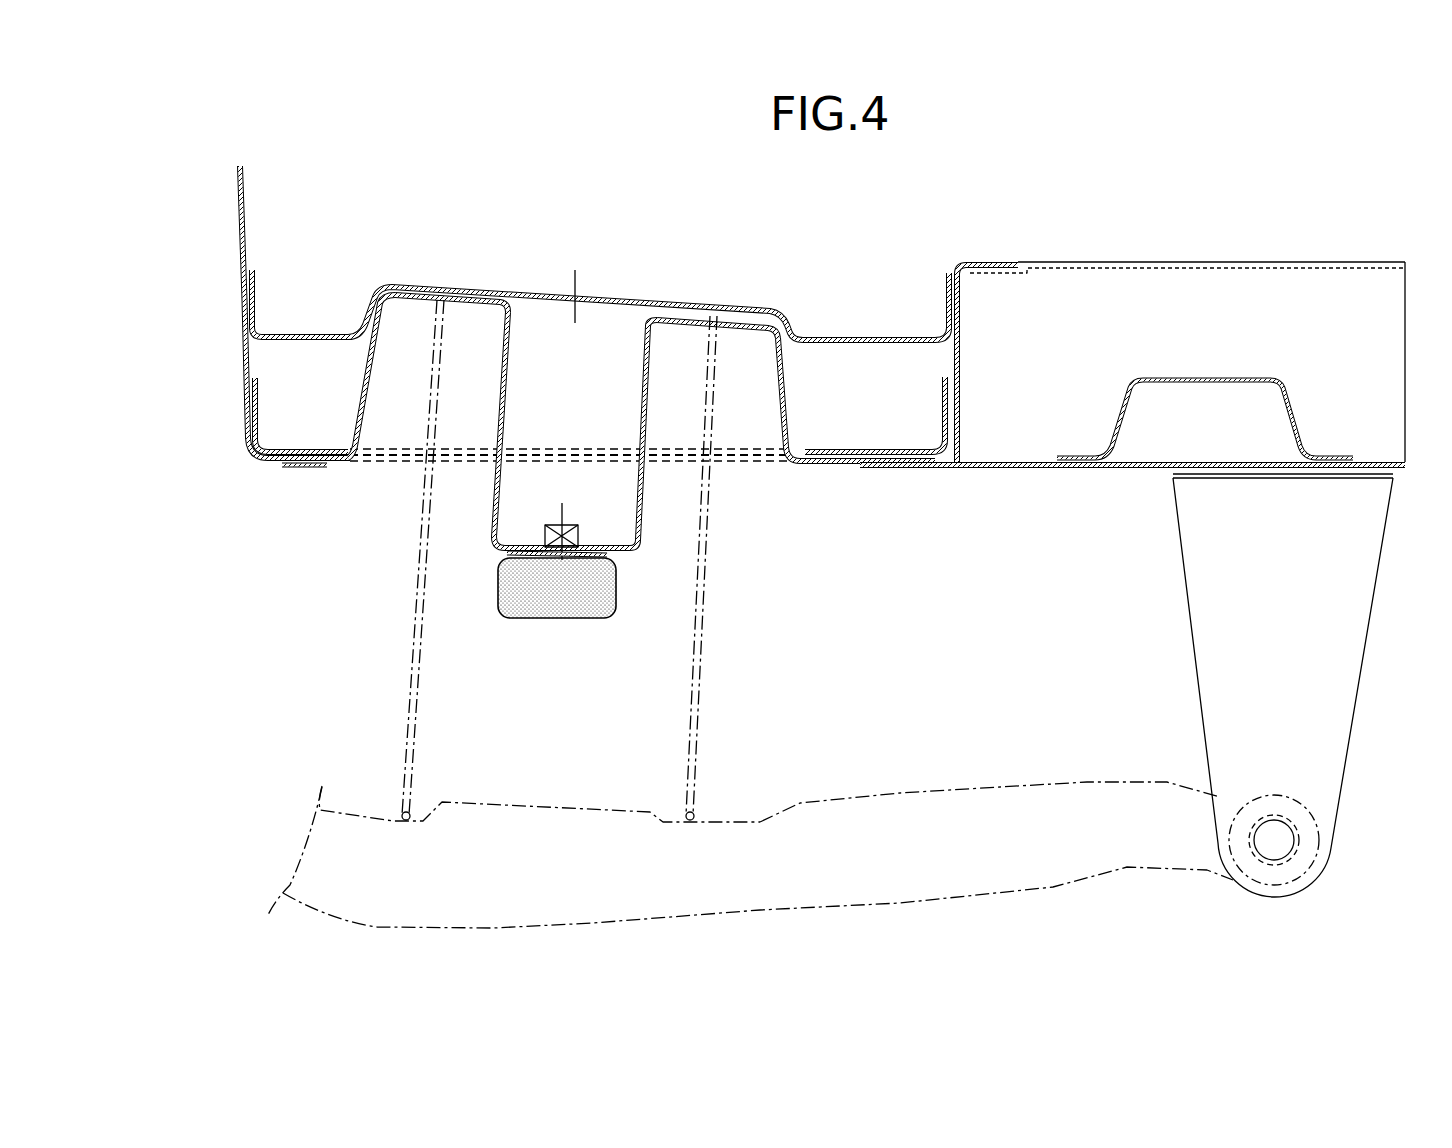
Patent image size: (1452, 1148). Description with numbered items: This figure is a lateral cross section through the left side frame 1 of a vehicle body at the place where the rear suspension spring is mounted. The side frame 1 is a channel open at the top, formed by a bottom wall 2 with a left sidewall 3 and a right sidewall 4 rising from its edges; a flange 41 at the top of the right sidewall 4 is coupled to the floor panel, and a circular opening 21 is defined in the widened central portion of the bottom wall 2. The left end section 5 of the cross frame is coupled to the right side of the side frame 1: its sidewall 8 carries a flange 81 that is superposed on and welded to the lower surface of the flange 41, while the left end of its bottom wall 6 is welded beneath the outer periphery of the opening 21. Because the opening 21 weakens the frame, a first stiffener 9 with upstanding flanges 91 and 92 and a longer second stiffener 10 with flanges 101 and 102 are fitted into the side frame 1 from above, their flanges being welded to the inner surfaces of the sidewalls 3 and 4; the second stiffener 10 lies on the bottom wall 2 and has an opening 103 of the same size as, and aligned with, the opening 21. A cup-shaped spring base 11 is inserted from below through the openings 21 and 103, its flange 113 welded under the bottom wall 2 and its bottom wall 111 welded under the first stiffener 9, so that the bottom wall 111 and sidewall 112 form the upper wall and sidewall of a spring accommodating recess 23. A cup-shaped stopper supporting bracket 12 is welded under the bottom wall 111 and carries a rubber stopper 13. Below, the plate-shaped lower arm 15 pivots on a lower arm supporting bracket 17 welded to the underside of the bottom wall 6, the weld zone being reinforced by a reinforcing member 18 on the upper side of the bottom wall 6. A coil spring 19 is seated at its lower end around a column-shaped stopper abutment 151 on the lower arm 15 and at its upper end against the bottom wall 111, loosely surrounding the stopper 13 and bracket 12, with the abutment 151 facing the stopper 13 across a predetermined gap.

The side frame 1 is at (249, 221).
The bottom wall 2 is at (300, 466).
The circular opening 21 is at (338, 465).
The left sidewall 3 is at (240, 364).
The right sidewall 4 is at (962, 363).
The flange 41 is at (997, 261).
The left end section of cross frame 5 is at (1197, 258).
The bottom wall 6 is at (1000, 473).
The sidewall 8 is at (1143, 285).
The flange 81 is at (1350, 261).
The first stiffener 9 is at (829, 330).
The flange 91 is at (256, 294).
The flange 92 is at (947, 300).
The second stiffener 10 is at (850, 445).
The flange 101 is at (258, 402).
The flange 102 is at (946, 399).
The opening 103 is at (807, 453).
The spring base 11 is at (376, 386).
The bottom wall 111 is at (415, 298).
The sidewall 112 is at (773, 356).
The flange 113 is at (832, 472).
The stopper supporting bracket 12 is at (495, 410).
The stopper 13 is at (573, 610).
The lower arm 15 is at (1062, 890).
The stopper abutment 151 is at (557, 802).
The lower arm supporting bracket 17 is at (1210, 648).
The reinforcing member 18 is at (1235, 378).
The coil spring 19 is at (407, 653).
The spring accommodating recess 23 is at (762, 414).